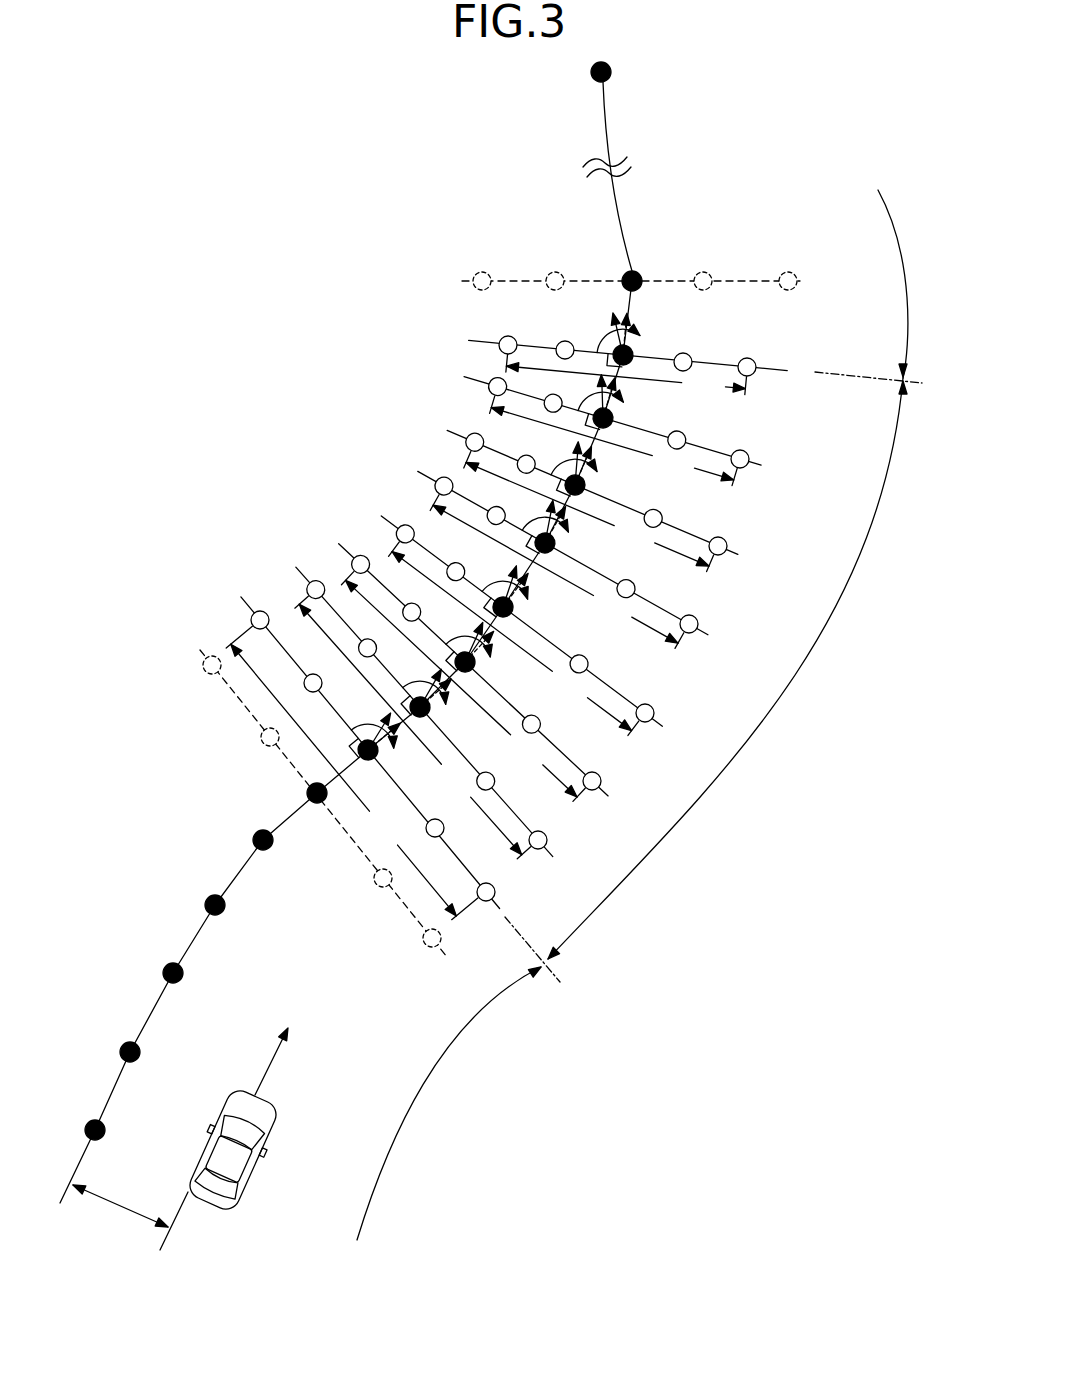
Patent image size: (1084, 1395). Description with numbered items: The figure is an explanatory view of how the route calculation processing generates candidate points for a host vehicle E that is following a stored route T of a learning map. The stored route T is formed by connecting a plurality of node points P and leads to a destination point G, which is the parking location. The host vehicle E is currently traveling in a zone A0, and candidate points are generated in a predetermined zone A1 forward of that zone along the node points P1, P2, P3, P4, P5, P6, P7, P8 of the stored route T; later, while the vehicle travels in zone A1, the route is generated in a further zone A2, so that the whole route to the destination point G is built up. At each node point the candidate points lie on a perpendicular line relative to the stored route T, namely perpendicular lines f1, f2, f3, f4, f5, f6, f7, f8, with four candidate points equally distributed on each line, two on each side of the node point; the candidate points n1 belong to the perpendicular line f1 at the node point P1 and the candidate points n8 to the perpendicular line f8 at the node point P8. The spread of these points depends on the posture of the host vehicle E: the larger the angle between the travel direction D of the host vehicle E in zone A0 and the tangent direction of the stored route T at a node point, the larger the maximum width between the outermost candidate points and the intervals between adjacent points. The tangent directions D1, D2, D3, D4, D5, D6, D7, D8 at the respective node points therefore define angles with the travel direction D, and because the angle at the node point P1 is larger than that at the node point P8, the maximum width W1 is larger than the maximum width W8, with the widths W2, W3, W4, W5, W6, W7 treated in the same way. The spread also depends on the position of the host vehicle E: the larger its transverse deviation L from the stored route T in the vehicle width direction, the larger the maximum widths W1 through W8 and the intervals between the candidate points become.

The destination point G is at (620, 73).
The stored route T is at (622, 213).
The node points P is at (165, 971).
The node point P1 is at (365, 759).
The node point P2 is at (430, 708).
The node point P3 is at (476, 660).
The node point P4 is at (515, 607).
The node point P5 is at (554, 542).
The node point P6 is at (586, 483).
The node point P7 is at (615, 417).
The node point P8 is at (632, 363).
The travel direction D is at (442, 693).
The tangent direction D1 is at (393, 732).
The tangent direction D2 is at (443, 689).
The tangent direction D3 is at (486, 643).
The tangent direction D4 is at (525, 587).
The tangent direction D5 is at (562, 522).
The tangent direction D6 is at (592, 462).
The tangent direction D7 is at (618, 397).
The tangent direction D8 is at (639, 326).
The perpendicular line f1 is at (241, 597).
The perpendicular line f2 is at (296, 567).
The perpendicular line f3 is at (339, 544).
The perpendicular line f4 is at (381, 516).
The perpendicular line f5 is at (418, 471).
The perpendicular line f6 is at (447, 430).
The perpendicular line f7 is at (464, 377).
The perpendicular line f8 is at (469, 340).
The maximum width W1 is at (345, 778).
The maximum width W2 is at (410, 729).
The maximum width W3 is at (461, 688).
The maximum width W4 is at (511, 641).
The maximum width W5 is at (555, 574).
The maximum width W6 is at (588, 514).
The maximum width W7 is at (612, 444).
The maximum width W8 is at (626, 377).
The candidate points n1 is at (262, 631).
The candidate points n8 is at (508, 335).
The zone A0 is at (458, 1078).
The predetermined zone A1 is at (727, 668).
The zone A2 is at (878, 286).
The host vehicle E is at (207, 1196).
The distance (amount of transverse deviation) L is at (112, 1207).